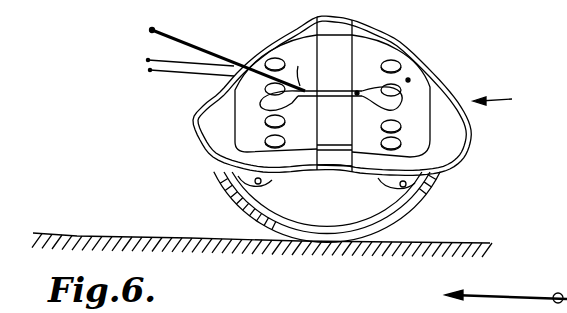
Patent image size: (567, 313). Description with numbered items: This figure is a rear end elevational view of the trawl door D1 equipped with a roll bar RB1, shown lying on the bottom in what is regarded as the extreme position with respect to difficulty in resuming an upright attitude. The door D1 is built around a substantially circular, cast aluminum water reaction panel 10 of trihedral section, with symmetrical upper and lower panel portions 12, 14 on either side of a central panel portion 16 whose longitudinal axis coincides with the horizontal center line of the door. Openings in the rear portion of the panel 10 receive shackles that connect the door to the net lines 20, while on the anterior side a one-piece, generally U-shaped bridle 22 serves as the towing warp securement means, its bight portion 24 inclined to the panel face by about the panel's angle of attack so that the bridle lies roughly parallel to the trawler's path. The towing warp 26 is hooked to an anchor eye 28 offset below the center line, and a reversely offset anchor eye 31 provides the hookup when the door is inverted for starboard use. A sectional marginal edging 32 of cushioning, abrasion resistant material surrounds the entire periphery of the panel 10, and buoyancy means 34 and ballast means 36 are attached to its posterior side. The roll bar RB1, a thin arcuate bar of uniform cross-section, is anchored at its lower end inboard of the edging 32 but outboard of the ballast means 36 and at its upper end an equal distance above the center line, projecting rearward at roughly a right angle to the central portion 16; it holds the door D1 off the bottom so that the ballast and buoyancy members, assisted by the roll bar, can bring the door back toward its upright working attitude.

The water reaction panel 10 is at (334, 50).
The upper panel portion 12 is at (416, 89).
The lower panel portion 14 is at (241, 120).
The central panel portion 16 is at (340, 164).
The net lines 20 is at (170, 58).
The bridle 22 is at (317, 101).
The bight portion 24 is at (333, 92).
The towing warp 26 is at (188, 45).
The anchor eye 28 is at (365, 96).
The reversely offset anchor eye 31 is at (300, 86).
The marginal edging 32 is at (392, 39).
The buoyancy means 34 is at (385, 187).
The ballast means 36 is at (234, 186).
The roll bar RB1 is at (404, 212).
The trawl door D1 is at (504, 101).